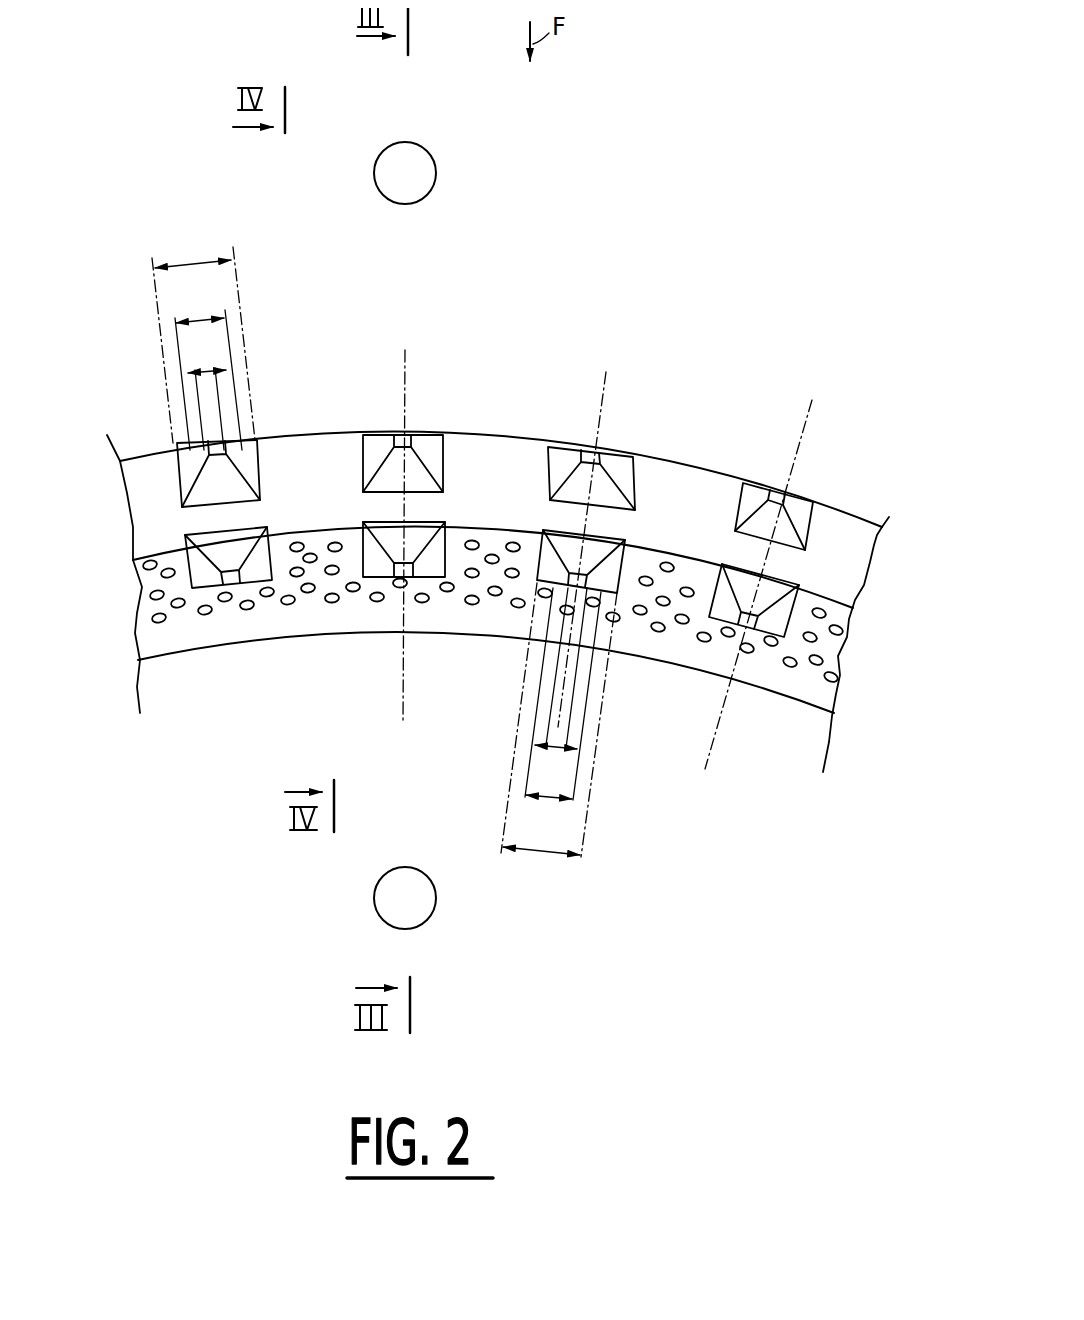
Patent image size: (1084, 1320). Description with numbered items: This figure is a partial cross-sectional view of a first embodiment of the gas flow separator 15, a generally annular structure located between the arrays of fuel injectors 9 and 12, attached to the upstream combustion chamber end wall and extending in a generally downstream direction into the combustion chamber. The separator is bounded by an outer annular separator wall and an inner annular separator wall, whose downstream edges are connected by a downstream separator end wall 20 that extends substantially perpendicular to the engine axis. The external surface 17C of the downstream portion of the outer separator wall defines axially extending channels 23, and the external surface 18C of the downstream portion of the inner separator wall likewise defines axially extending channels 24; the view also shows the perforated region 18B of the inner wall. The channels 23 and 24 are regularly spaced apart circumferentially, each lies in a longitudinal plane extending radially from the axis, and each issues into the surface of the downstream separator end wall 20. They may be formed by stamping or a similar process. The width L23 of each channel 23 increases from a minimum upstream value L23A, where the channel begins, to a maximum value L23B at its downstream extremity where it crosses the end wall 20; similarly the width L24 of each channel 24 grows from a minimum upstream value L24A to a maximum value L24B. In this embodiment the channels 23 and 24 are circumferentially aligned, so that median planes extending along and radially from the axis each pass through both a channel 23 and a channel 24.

The fuel injector array 9 is at (413, 158).
The fuel injector array 12 is at (383, 902).
The gas flow separator 15 is at (680, 398).
The external surface of outer separator wall 17C is at (859, 505).
The perforation holes 18B is at (172, 578).
The external surface of inner separator wall 18C is at (293, 645).
The downstream separator end wall 20 is at (851, 597).
The channels 23 is at (223, 482).
The channels 24 is at (233, 550).
The width of channel 23 L23 is at (193, 318).
The minimum upstream width of channel 23 L23A is at (203, 370).
The maximum width of channel 23 L23B is at (182, 263).
The width of channel 24 L24 is at (547, 797).
The minimum upstream width of channel 24 L24A is at (556, 752).
The maximum width of channel 24 L24B is at (530, 852).